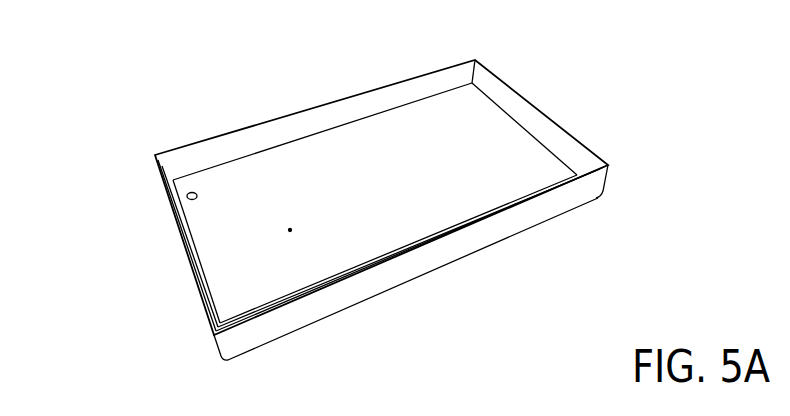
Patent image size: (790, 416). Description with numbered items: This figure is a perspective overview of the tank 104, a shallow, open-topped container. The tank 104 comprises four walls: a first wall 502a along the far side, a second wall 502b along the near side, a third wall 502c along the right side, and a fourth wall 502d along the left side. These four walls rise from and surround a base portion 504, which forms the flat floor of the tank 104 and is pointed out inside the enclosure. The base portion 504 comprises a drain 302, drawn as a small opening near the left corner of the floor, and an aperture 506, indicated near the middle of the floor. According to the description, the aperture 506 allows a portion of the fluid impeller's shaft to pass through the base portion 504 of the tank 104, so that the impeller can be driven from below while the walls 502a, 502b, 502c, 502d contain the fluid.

The tank 104 is at (146, 108).
The drain 302 is at (187, 199).
The first wall 502a is at (317, 107).
The second wall 502b is at (432, 255).
The third wall 502c is at (532, 122).
The fourth wall 502d is at (190, 257).
The base portion 504 is at (474, 106).
The aperture 506 is at (290, 230).